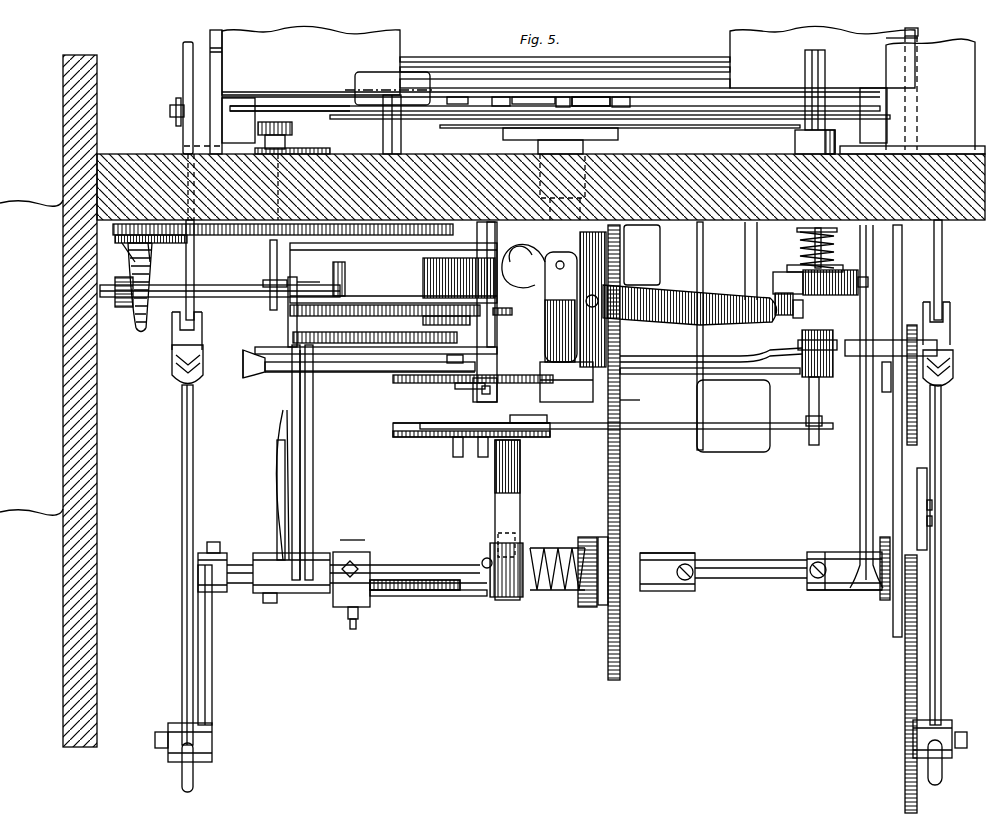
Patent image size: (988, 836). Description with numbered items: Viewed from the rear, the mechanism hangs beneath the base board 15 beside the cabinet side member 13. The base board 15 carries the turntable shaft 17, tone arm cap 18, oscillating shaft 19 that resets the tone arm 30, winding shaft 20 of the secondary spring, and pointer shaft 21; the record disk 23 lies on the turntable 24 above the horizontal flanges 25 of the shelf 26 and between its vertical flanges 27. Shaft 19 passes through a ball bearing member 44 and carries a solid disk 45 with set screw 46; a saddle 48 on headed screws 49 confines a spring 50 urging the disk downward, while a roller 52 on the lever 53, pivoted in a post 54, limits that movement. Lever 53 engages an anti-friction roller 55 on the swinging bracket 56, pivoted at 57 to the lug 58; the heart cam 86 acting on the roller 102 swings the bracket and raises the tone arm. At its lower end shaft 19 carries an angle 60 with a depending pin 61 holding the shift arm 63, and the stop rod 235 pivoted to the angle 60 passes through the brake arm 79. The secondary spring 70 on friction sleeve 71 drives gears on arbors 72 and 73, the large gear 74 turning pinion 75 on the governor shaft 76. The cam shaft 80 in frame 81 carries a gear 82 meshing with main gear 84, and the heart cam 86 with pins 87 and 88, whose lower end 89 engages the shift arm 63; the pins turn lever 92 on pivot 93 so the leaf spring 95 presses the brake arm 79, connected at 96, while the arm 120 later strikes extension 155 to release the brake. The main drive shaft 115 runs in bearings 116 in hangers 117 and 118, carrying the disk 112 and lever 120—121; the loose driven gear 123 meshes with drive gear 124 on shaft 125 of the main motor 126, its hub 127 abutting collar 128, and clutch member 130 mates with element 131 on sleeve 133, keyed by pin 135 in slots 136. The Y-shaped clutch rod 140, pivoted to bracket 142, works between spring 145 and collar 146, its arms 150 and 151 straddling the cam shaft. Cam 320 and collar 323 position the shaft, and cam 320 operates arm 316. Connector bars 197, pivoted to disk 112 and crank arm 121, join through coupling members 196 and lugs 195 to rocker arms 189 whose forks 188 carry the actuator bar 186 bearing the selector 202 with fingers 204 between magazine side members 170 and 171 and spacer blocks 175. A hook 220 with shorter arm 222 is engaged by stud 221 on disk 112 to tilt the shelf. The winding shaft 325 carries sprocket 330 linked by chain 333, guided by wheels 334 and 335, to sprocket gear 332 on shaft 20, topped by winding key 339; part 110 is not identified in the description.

The side member 13 is at (68, 109).
The base board 15 is at (114, 162).
The turntable shaft 17 is at (565, 100).
The tone arm cap 18 is at (930, 152).
The oscillating shaft 19 is at (822, 80).
The winding shaft 20 is at (402, 135).
The pointer shaft 21 is at (291, 132).
The phonograph record disk 23 is at (455, 68).
The turntable 24 is at (663, 125).
The horizontal flanges 25 is at (236, 148).
The shelf 26 is at (184, 146).
The vertical flanges 27 is at (210, 90).
The tone arm 30 is at (937, 44).
The ball bearing member 44 is at (795, 140).
The solid disk 45 is at (773, 283).
The set screw 46 is at (870, 282).
The saddle 48 is at (787, 272).
The headed screws 49 is at (829, 258).
The spring 50 is at (797, 240).
The roller 52 is at (777, 298).
The lever 53 is at (738, 318).
The post 54 is at (642, 255).
The anti-friction roller 55 is at (545, 258).
The swinging bracket 56 is at (548, 340).
The pivot 57 is at (608, 315).
The lug 58 is at (598, 262).
The angle 60 is at (822, 362).
The depending pin 61 is at (820, 406).
The shift arm 63 is at (605, 429).
The secondary spring 70 is at (423, 278).
The friction sleeve 71 is at (405, 262).
The arbor 72 is at (415, 327).
The arbor 73 is at (350, 320).
The large gear 74 is at (270, 246).
The pinion 75 is at (346, 279).
The governor shaft 76 is at (300, 325).
The brake arm 79 is at (275, 357).
The cam shaft 80 is at (498, 365).
The spring motor frame 81 is at (495, 246).
The gear 82 is at (505, 313).
The main gear 84 is at (450, 318).
The heart cam 86 is at (428, 383).
The brake operating pin 87 is at (447, 360).
The brake operating pin 88 is at (452, 388).
The lower end of pin 89 is at (455, 450).
The lever 92 is at (330, 416).
The pivot 93 is at (278, 380).
The leaf spring 95 is at (262, 376).
The pivotal connection 96 is at (325, 412).
The roller 102 is at (565, 404).
The latch 110 is at (927, 486).
The disk 112 is at (906, 664).
The main drive shaft 115 is at (236, 592).
The bearings 116 is at (310, 598).
The hanger 117 is at (860, 518).
The hanger 118 is at (311, 503).
The arm 120 is at (278, 542).
The crank arm 121 is at (211, 678).
The driven gear 123 is at (622, 528).
The drive gear 124 is at (618, 420).
The shaft 125 is at (632, 362).
The main motor 126 is at (733, 458).
The extended hub 127 is at (680, 558).
The fixed collar 128 is at (690, 558).
The clutch member 130 is at (611, 540).
The cooperating element 131 is at (586, 609).
The clutch sleeve 133 is at (476, 596).
The pin 135 is at (490, 556).
The slots 136 is at (460, 589).
The clutch rod 140 is at (521, 520).
The bracket 142 is at (358, 552).
The spring 145 is at (560, 594).
The fixed collar 146 is at (485, 558).
The arm 150 is at (540, 440).
The arm 151 is at (405, 440).
The depending extension 155 is at (275, 432).
The side member 170 is at (905, 36).
The side member 171 is at (210, 36).
The spacer blocks 175 is at (304, 46).
The actuator bar 186 is at (171, 112).
The forks 188 is at (183, 60).
The rocker arms 189 is at (193, 278).
The adjustable lug 195 is at (175, 316).
The coupling member 196 is at (172, 360).
The connector bar 197 is at (183, 482).
The selector 202 is at (590, 98).
The downturned fingers 204 is at (618, 108).
The hook 220 is at (900, 340).
The stud 221 is at (891, 348).
The shorter arm 222 is at (893, 622).
The stop rod 235 is at (697, 369).
The inner arm 316 is at (356, 630).
The cam 320 is at (350, 610).
The collar 323 is at (812, 592).
The winding shaft 325 is at (241, 297).
The sprocket 330 is at (126, 323).
The sprocket gear 332 is at (430, 232).
The chain 333 is at (140, 300).
The idle chain guide wheel 334 is at (175, 245).
The idle chain guide wheel 335 is at (130, 244).
The winding key 339 is at (360, 78).